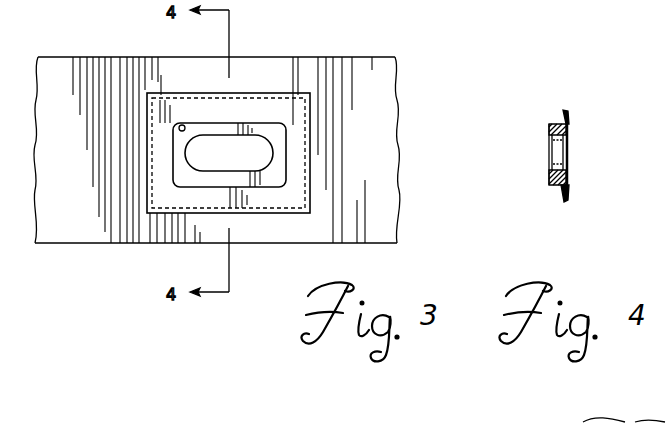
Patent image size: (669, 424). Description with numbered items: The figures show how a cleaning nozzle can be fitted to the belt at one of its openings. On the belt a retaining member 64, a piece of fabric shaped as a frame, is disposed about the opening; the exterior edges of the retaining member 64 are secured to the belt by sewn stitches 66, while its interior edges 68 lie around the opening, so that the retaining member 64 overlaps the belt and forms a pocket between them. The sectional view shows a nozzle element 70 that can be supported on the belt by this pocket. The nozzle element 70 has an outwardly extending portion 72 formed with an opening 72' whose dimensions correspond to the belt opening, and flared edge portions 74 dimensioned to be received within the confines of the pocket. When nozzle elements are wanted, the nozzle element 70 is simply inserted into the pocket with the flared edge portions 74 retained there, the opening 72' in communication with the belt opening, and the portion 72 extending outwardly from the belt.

In FIG. 3, the retaining member 64 is at (296, 108).
In FIG. 3, the sewn stitches 66 is at (272, 98).
In FIG. 3, the interior edges 68 is at (182, 125).
In FIG. 3, the nozzle element 70 is at (273, 180).
In FIG. 4, the nozzle element 70 is at (541, 132).
In FIG. 4, the outwardly extending portion 72 is at (543, 169).
In FIG. 4, the opening 72' is at (585, 152).
In FIG. 4, the flared edge portions 74 is at (568, 113).